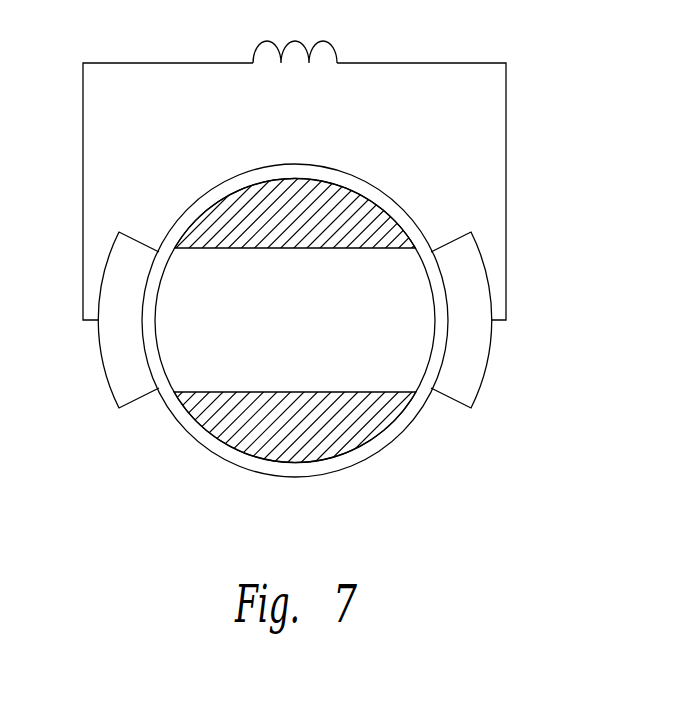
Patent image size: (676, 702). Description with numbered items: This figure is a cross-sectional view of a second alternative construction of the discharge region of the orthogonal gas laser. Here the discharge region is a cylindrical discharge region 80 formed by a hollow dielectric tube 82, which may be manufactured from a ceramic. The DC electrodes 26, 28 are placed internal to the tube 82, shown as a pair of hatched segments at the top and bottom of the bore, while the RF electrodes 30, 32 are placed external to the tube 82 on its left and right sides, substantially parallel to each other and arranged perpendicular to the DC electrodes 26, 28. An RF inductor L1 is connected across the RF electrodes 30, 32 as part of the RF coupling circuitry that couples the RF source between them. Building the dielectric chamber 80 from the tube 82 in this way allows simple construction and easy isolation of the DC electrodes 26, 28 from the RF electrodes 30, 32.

The RF inductor L1 is at (294, 165).
The DC electrode 26 is at (278, 448).
The DC electrode 28 is at (312, 192).
The RF electrode 30 is at (130, 268).
The RF electrode 32 is at (483, 353).
The cylindrical discharge region 80 is at (232, 367).
The hollow dielectric tube 82 is at (377, 460).